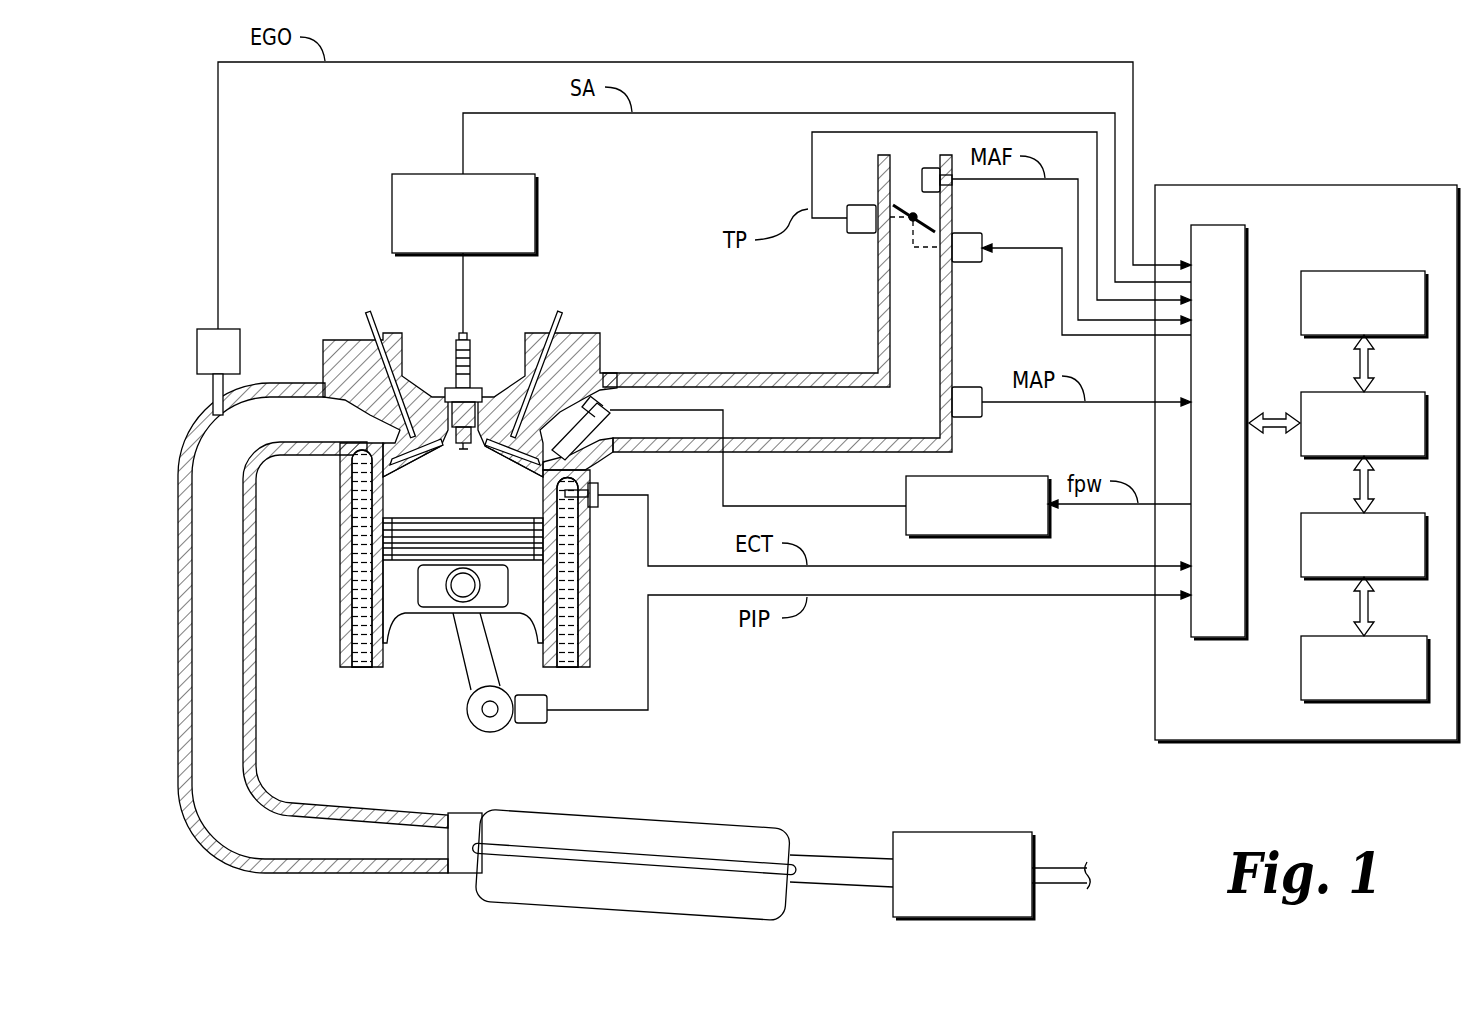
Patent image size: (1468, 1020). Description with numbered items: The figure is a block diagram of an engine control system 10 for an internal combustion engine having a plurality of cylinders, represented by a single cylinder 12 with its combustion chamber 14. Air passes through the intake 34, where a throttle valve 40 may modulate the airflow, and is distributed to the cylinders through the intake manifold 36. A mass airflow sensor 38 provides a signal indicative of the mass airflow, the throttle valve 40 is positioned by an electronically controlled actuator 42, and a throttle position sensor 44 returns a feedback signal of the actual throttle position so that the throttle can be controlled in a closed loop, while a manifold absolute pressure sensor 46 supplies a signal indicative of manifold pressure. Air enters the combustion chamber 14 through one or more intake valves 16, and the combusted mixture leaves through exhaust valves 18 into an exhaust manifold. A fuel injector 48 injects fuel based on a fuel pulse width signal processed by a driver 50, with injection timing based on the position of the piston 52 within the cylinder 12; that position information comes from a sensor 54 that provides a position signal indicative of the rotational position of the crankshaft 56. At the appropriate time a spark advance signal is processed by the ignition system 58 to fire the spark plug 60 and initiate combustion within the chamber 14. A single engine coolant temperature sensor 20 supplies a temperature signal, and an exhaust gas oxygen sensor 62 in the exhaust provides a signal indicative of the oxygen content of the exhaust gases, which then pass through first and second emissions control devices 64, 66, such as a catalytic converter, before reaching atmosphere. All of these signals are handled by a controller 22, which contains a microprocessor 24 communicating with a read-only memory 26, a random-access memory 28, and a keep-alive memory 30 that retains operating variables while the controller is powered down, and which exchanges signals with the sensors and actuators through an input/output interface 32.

The system 10 is at (343, 255).
The cylinder 12 is at (388, 665).
The combustion chamber 14 is at (399, 478).
The intake valve 16 is at (553, 318).
The exhaust valve 18 is at (375, 318).
The engine coolant temperature sensor 20 is at (600, 482).
The controller 22 is at (1320, 184).
The microprocessor 24 is at (1300, 405).
The read-only memory (ROM) 26 is at (1300, 297).
The random-access memory (RAM) 28 is at (1300, 530).
The keep-alive memory (KAM) 30 is at (1300, 665).
The input/output (I/O) interface 32 is at (1214, 224).
The intake 34 is at (905, 290).
The intake manifold 36 is at (768, 400).
The mass airflow sensor 38 is at (931, 168).
The throttle valve 40 is at (912, 222).
The actuator 42 is at (966, 262).
The throttle position sensor 44 is at (860, 204).
The manifold absolute pressure sensor 46 is at (968, 387).
The fuel injector 48 is at (618, 402).
The driver 50 is at (983, 476).
The piston 52 is at (410, 605).
The sensor 54 is at (533, 723).
The crankshaft 56 is at (470, 723).
The ignition system 58 is at (408, 174).
The spark plug 60 is at (455, 348).
The exhaust gas oxygen sensor 62 is at (205, 328).
The first emissions control device 64 is at (712, 810).
The second emissions control device 66 is at (983, 832).